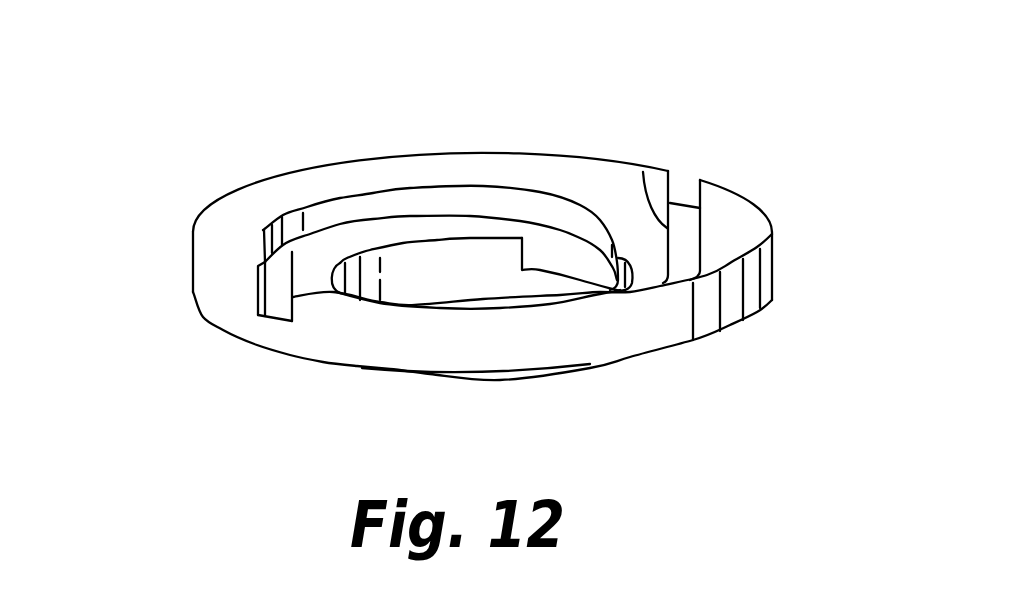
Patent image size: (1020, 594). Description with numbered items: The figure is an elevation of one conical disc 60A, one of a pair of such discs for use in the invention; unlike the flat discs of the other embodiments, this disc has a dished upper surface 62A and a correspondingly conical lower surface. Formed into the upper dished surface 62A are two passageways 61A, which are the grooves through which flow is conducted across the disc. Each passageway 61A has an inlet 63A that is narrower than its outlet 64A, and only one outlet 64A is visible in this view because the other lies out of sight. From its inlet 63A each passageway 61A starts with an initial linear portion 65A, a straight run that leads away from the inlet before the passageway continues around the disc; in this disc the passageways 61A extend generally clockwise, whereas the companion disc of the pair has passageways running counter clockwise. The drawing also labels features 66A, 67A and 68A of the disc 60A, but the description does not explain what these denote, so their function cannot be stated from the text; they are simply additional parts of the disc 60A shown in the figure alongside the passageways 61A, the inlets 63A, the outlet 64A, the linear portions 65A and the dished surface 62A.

The conical disc 60A is at (487, 153).
The passageways 61A is at (378, 203).
The upper dished surface 62A is at (742, 230).
The inlet 63A is at (690, 183).
The outlet 64A is at (562, 270).
The initial linear portion 65A is at (642, 170).
The bottom edge 66A is at (455, 380).
The outer wall 67A is at (365, 341).
The inner turn 68A is at (467, 273).